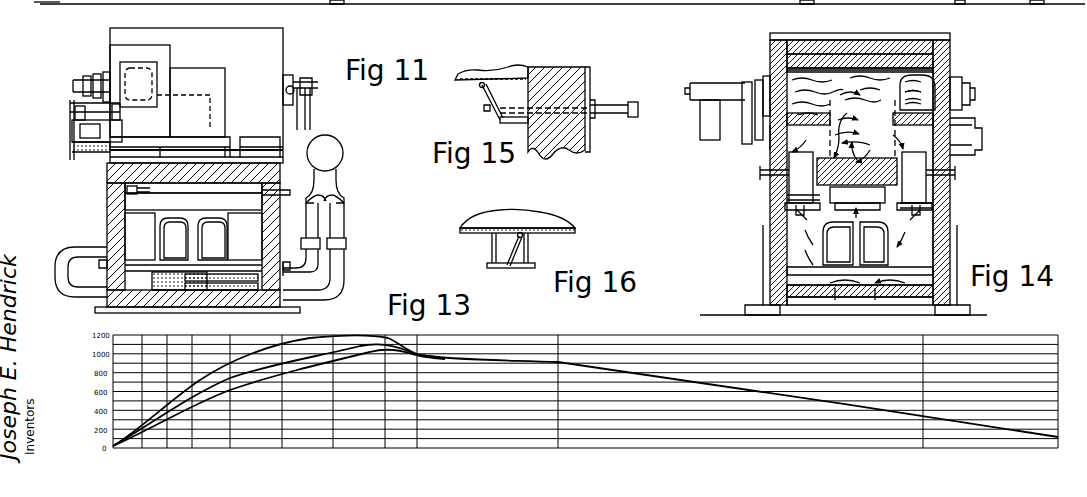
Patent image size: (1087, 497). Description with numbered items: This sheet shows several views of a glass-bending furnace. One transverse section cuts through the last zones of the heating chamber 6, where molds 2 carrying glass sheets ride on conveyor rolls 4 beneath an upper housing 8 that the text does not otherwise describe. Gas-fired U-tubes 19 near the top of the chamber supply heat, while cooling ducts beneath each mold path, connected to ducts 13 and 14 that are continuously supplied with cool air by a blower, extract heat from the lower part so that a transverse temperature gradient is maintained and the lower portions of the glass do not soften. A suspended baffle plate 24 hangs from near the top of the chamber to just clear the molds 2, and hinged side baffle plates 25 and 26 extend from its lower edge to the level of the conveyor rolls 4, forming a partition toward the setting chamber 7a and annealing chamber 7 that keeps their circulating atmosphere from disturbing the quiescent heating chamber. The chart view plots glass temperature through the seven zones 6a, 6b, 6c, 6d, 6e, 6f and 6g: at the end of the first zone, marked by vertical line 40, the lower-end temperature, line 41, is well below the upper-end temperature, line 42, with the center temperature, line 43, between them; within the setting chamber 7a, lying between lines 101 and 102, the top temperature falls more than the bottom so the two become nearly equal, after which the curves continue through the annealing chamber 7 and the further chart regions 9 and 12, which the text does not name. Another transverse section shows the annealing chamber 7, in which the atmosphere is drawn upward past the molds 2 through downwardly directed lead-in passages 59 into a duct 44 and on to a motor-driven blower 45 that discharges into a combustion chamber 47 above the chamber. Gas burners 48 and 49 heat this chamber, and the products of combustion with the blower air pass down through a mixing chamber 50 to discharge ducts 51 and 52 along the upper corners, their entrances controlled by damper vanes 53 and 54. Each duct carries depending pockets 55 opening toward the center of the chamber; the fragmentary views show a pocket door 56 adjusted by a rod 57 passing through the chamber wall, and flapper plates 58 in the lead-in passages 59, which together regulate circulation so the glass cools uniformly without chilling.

In FIG. 11, the molds 2 is at (160, 247).
In FIG. 14, the molds 2 is at (822, 240).
In FIG. 14, the conveyor rolls 4 is at (800, 270).
In FIG. 11, the heating chamber 6 is at (118, 187).
In FIG. 15, the annealing chamber 7 is at (576, 82).
In FIG. 14, the annealing chamber 7 is at (940, 222).
In FIG. 13, the annealing chamber 7 is at (498, 445).
In FIG. 11, the hood / housing 8 is at (258, 42).
In FIG. 13, the cooling curve region 9 is at (745, 445).
In FIG. 11, the section line 12 / curve end 12 is at (270, 13).
In FIG. 13, the section line 12 / curve end 12 is at (992, 445).
In FIG. 11, the duct 13 is at (327, 157).
In FIG. 14, the duct 14 is at (685, 6).
In FIG. 11, the U-tubes 19 is at (150, 190).
In FIG. 11, the baffle plate 24 is at (242, 210).
In FIG. 11, the side baffle plate 25 is at (250, 228).
In FIG. 11, the side baffle plate 26 is at (132, 247).
In FIG. 13, the vertical line 40 is at (145, 345).
In FIG. 13, the line 41 is at (213, 403).
In FIG. 13, the line 42 is at (228, 370).
In FIG. 13, the line 43 is at (318, 353).
In FIG. 16, the duct 44 is at (540, 218).
In FIG. 14, the duct 44 is at (823, 195).
In FIG. 11, the motor driven blower 45 is at (108, 100).
In FIG. 14, the combustion chamber 47 is at (873, 97).
In FIG. 11, the gas burner 48 is at (105, 75).
In FIG. 14, the gas burner 48 is at (770, 86).
In FIG. 11, the gas burner 49 is at (293, 78).
In FIG. 14, the gas burner 49 is at (963, 91).
In FIG. 14, the mixing chamber 50 is at (800, 136).
In FIG. 14, the discharge duct 51 is at (792, 196).
In FIG. 15, the discharge duct 52 is at (500, 72).
In FIG. 14, the discharge duct 52 is at (926, 198).
In FIG. 14, the damper vane 53 is at (800, 165).
In FIG. 14, the damper vane 54 is at (913, 173).
In FIG. 15, the pockets 55 is at (494, 117).
In FIG. 14, the pockets 55 is at (800, 210).
In FIG. 15, the door 56 is at (483, 100).
In FIG. 15, the rod 57 is at (612, 106).
In FIG. 16, the flapper plates 58 is at (516, 268).
In FIG. 16, the lead-in passages 59 is at (491, 249).
In FIG. 14, the lead-in passages 59 is at (870, 205).
In FIG. 13, the first zone 6a is at (132, 443).
In FIG. 13, the second zone 6b is at (158, 445).
In FIG. 13, the third zone 6c is at (181, 445).
In FIG. 13, the fourth zone 6d is at (205, 445).
In FIG. 13, the fifth zone 6e is at (267, 446).
In FIG. 13, the sixth zone 6f is at (307, 446).
In FIG. 13, the seventh zone 6g is at (343, 446).
In FIG. 13, the setting chamber 7a is at (405, 445).
In FIG. 13, the line 101 is at (385, 435).
In FIG. 13, the line 102 is at (417, 433).